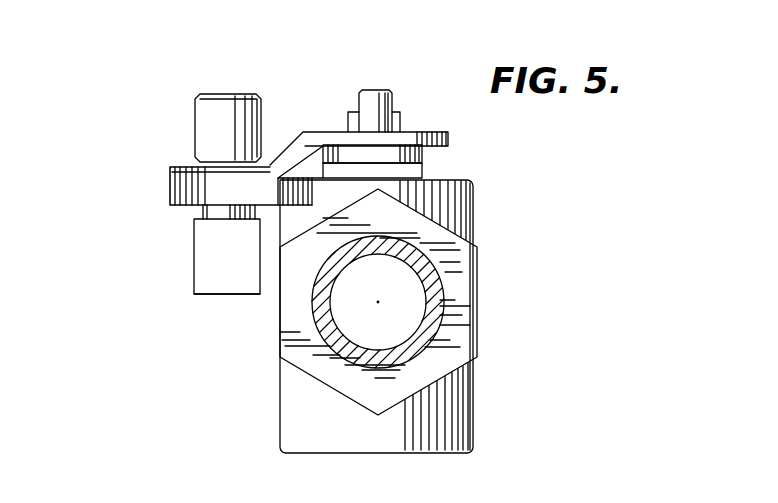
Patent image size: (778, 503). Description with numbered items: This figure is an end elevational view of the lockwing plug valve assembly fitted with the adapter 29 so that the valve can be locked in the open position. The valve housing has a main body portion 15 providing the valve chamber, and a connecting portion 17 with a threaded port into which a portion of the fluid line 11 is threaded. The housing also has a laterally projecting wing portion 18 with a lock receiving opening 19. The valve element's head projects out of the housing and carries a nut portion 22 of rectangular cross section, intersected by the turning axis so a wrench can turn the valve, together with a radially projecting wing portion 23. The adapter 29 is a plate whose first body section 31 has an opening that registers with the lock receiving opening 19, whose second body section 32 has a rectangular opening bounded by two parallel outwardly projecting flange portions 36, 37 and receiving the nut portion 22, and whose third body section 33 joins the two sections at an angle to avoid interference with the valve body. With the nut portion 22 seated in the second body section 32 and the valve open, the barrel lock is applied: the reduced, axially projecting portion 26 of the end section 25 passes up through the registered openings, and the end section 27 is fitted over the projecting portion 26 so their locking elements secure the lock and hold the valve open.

The fluid line 11 is at (449, 271).
The main body portion 15 is at (475, 415).
The connecting portion 17 is at (480, 298).
The wing portion 18 is at (170, 192).
The lock receiving opening 19 is at (200, 210).
The nut portion 22 is at (379, 90).
The wing portion 23 is at (423, 157).
The end section 25 is at (230, 295).
The axially projecting portion 26 is at (215, 215).
The end section 27 is at (202, 113).
The adapter 29 is at (166, 167).
The first body section 31 is at (183, 167).
The second body section 32 is at (448, 132).
The third body section 33 is at (293, 148).
The flange portion 36 is at (402, 112).
The flange portion 37 is at (350, 112).